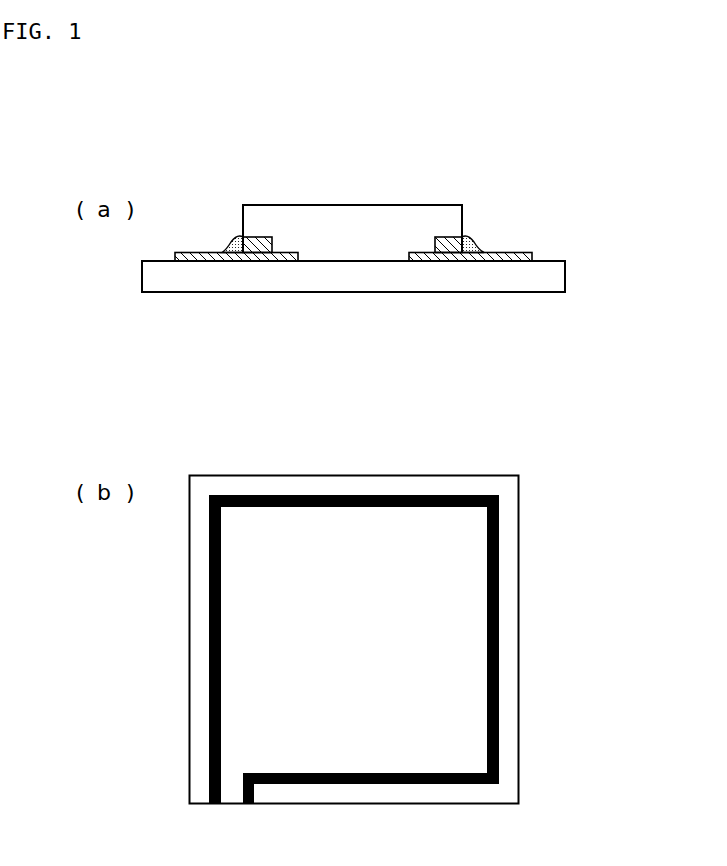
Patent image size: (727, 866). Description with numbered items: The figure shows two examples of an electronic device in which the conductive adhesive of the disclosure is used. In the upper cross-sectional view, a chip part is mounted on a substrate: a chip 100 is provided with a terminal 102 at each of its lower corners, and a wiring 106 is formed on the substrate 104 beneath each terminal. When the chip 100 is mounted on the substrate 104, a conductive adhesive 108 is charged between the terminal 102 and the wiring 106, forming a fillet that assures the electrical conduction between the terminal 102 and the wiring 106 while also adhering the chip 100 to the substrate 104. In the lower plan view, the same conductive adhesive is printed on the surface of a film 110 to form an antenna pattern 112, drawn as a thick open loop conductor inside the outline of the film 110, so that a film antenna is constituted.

The chip 100 is at (423, 212).
The terminal 102 is at (449, 241).
The substrate 104 is at (557, 278).
The wiring 106 is at (533, 256).
The conductive adhesive 108 is at (231, 237).
The film 110 is at (510, 517).
The antenna pattern 112 is at (498, 635).